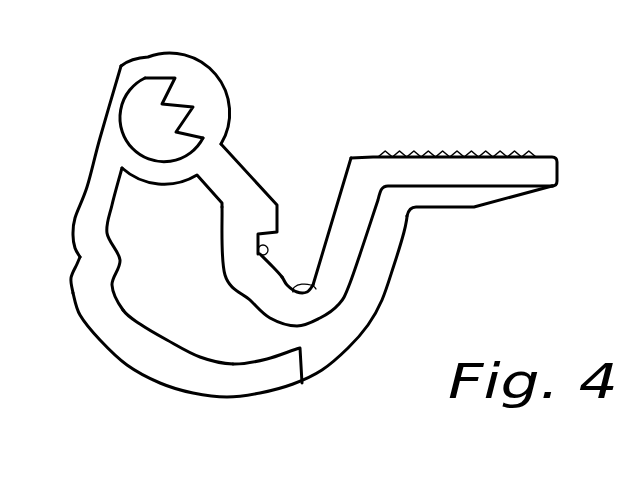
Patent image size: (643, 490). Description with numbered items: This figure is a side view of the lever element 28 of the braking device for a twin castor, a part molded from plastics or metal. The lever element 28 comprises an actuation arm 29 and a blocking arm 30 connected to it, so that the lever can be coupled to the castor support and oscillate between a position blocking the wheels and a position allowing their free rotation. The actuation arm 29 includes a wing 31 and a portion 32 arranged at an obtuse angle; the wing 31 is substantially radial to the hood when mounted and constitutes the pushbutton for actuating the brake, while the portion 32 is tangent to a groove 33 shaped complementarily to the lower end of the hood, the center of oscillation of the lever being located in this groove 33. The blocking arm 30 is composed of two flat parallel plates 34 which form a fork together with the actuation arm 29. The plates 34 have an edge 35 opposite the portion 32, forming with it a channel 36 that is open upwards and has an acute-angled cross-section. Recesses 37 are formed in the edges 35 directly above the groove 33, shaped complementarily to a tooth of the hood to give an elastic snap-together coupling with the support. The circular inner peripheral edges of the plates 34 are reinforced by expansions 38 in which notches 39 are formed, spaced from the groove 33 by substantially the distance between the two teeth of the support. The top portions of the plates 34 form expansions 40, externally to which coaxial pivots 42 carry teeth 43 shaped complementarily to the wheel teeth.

The lever element 28 is at (281, 406).
The actuation arm 29 is at (486, 213).
The blocking arm 30 is at (73, 186).
The wing 31 is at (548, 172).
The portion 32 is at (343, 275).
The groove 33 is at (318, 290).
The plates 34 is at (173, 332).
The edge 35 is at (280, 220).
The channel 36 is at (313, 210).
The recesses 37 is at (262, 260).
The expansions 38 is at (195, 382).
The notches 39 is at (77, 264).
The expansions 40 is at (215, 115).
The pivots 42 is at (132, 108).
The teeth 43 is at (182, 105).